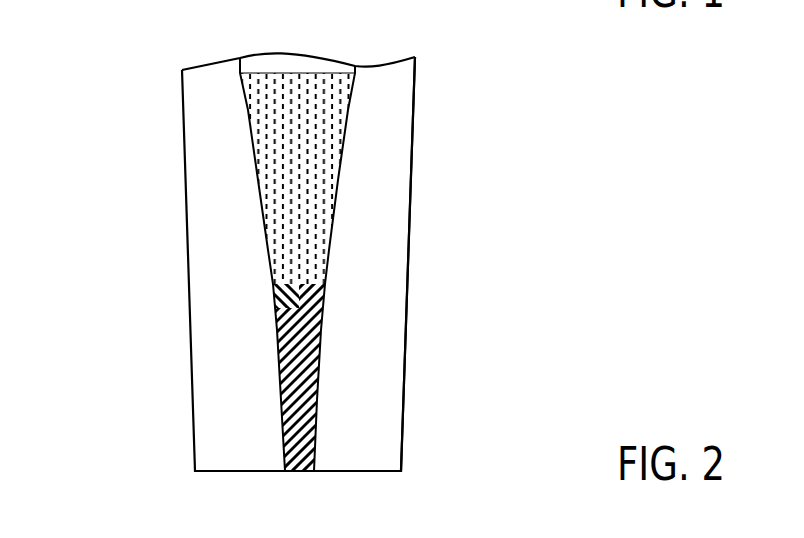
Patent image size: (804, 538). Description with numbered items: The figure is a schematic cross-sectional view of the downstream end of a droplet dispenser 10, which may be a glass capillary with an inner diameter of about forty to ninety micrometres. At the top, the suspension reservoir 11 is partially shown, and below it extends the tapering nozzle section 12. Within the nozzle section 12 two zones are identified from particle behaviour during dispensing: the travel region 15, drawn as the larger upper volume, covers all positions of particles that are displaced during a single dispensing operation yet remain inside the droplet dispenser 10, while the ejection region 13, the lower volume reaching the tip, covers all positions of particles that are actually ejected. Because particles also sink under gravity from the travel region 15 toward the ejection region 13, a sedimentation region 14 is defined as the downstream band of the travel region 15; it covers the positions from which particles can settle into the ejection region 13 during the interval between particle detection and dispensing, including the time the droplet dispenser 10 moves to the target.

The droplet dispenser 10 is at (578, 172).
The suspension reservoir 11 is at (278, 64).
The nozzle section 12 is at (447, 75).
The ejection region 13 is at (195, 470).
The sedimentation region 14 is at (323, 308).
The travel region 15 is at (240, 73).